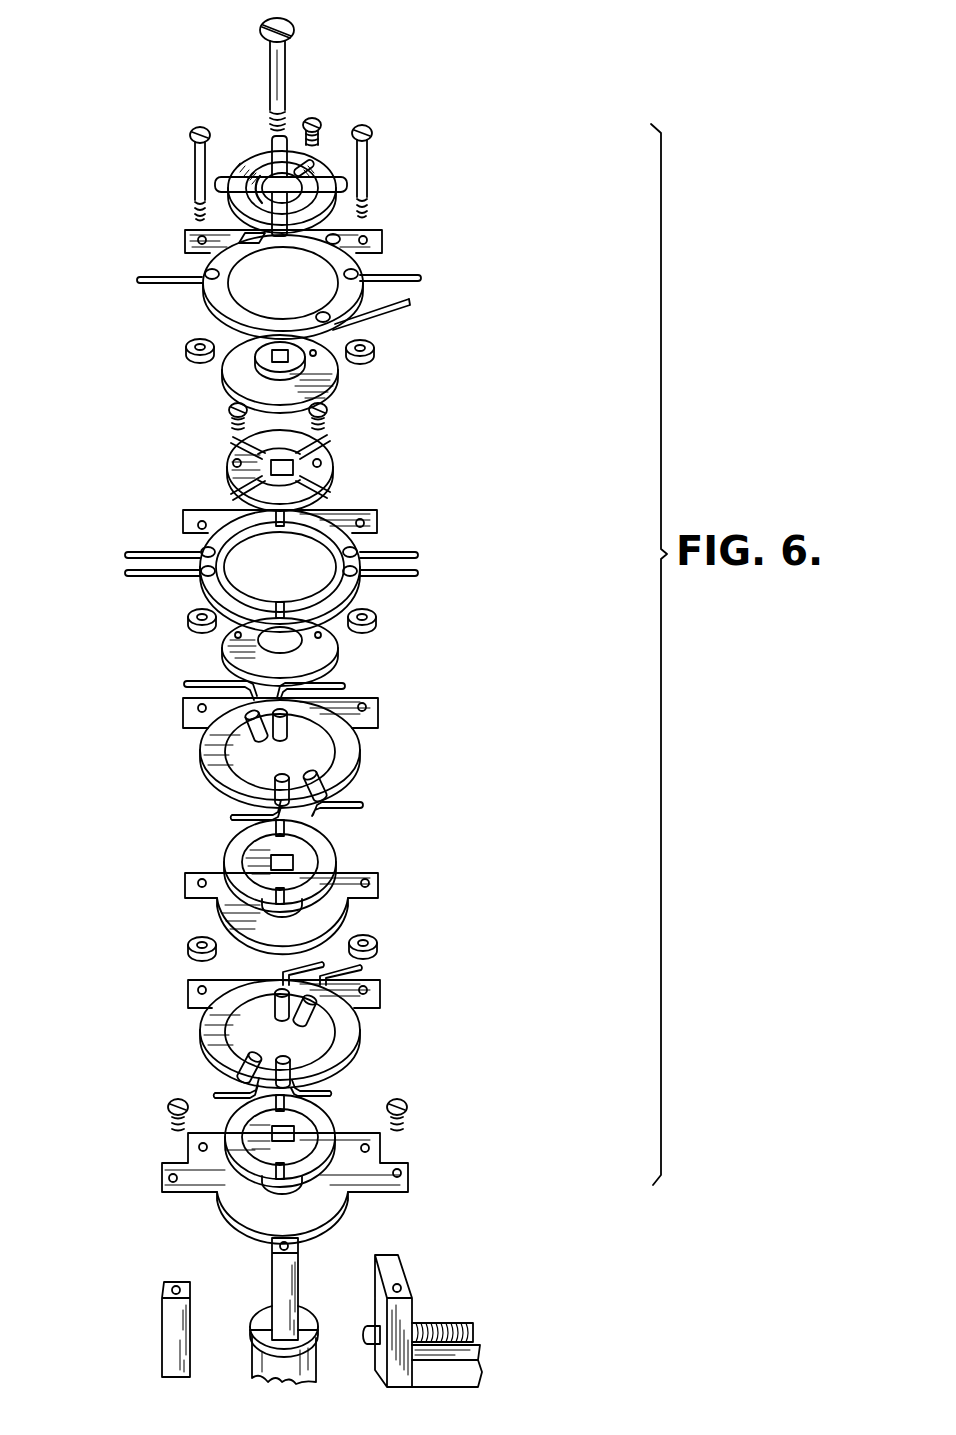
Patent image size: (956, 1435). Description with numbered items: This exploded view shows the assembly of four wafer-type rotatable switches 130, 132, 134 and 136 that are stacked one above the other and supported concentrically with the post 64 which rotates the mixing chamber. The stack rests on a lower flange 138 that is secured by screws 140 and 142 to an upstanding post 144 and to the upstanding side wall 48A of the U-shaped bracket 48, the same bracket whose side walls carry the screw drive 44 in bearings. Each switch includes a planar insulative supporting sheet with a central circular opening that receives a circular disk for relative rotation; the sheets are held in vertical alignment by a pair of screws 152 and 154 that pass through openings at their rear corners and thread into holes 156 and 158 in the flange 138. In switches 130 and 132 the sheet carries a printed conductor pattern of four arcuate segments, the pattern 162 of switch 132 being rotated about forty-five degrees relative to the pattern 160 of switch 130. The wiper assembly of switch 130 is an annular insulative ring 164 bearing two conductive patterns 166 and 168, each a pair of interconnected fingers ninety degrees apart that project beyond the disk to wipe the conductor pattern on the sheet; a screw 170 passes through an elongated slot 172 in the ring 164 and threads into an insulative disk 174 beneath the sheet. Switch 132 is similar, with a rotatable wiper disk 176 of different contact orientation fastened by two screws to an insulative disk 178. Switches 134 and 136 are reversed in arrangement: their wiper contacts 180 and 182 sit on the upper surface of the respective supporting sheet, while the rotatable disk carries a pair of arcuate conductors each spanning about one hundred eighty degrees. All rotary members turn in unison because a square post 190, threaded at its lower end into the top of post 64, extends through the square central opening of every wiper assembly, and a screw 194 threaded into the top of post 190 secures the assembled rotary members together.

The wafer-type rotatable switch 130 is at (448, 148).
The wafer-type rotatable switch 132 is at (450, 366).
The wafer-type rotatable switch 134 is at (453, 953).
The wafer-type rotatable switch 136 is at (453, 962).
The lower flange 138 is at (409, 1185).
The screw 140 is at (167, 1105).
The screw 142 is at (405, 1100).
The upstanding post 144 is at (162, 1317).
The screw 152 is at (192, 158).
The screw 154 is at (368, 153).
The threaded hole 156 is at (198, 1147).
The threaded hole 158 is at (370, 1148).
The conductor pattern 160 is at (216, 297).
The conductor pattern 162 is at (228, 535).
The insulative ring 164 is at (236, 195).
The conductive pattern 166 is at (257, 165).
The conductive pattern 168 is at (340, 180).
The screw 170 is at (315, 114).
The elongated slot 172 is at (310, 165).
The insulative disk 174 is at (238, 368).
The rotatable disk 176 is at (262, 460).
The insulative disk 178 is at (252, 650).
The wiper contacts 180 is at (277, 767).
The wiper contacts 182 is at (275, 1028).
The square post 190 is at (272, 1258).
The screw 194 is at (288, 58).
The post 64 is at (262, 1362).
The screw drive 44 is at (463, 1322).
The U-shaped bracket 48 is at (480, 1370).
The upstanding side wall 48A is at (407, 1273).